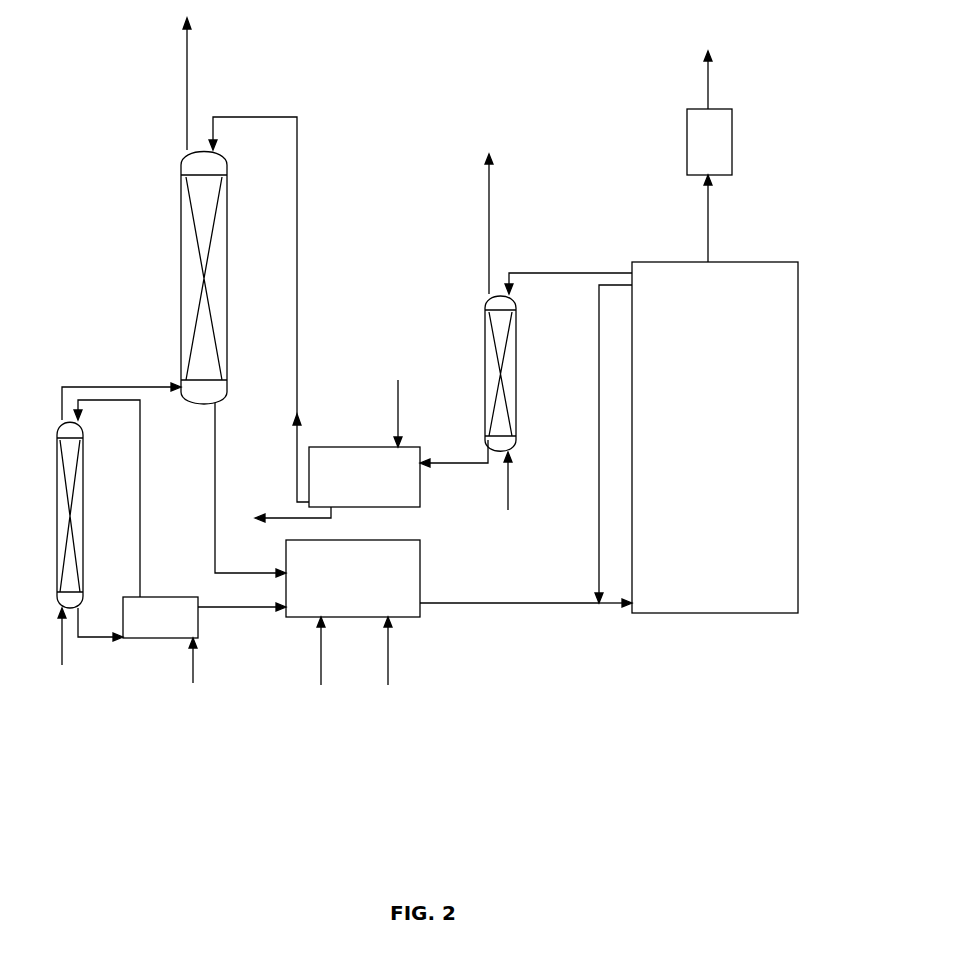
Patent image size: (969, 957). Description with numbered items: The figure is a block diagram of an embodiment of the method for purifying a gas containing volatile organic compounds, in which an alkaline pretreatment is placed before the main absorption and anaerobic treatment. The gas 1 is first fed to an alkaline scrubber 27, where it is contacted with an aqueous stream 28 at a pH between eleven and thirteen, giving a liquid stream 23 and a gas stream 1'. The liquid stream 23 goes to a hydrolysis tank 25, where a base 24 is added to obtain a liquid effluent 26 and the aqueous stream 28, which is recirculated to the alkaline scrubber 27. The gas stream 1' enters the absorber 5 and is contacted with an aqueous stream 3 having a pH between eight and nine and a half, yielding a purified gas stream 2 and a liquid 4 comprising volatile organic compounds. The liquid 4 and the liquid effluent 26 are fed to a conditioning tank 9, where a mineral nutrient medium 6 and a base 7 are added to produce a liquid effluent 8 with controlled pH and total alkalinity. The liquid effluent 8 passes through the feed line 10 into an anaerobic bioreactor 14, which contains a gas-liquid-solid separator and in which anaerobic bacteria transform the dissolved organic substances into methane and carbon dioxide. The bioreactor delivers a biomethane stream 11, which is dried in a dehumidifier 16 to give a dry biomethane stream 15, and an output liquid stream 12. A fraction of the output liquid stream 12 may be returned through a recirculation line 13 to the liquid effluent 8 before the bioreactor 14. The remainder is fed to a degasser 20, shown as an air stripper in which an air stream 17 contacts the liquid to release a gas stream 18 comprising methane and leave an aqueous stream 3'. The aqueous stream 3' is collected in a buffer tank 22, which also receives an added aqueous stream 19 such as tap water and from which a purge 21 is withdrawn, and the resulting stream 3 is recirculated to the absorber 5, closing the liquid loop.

The gas 1 is at (45, 636).
The gas stream 1' is at (121, 379).
The purified gas stream 2 is at (187, 135).
The aqueous stream 3 is at (259, 291).
The aqueous stream 3' is at (454, 449).
The liquid 4 is at (213, 450).
The absorber 5 is at (181, 277).
The mineral nutrient medium 6 is at (320, 663).
The base 7 is at (387, 662).
The liquid effluent 8 is at (497, 603).
The conditioning tank 9 is at (420, 594).
The feed line 10 is at (607, 603).
The biomethane stream 11 is at (707, 228).
The output liquid stream 12 is at (557, 273).
The recirculation line 13 is at (598, 383).
The anaerobic bioreactor 14 is at (745, 262).
The dry biomethane stream 15 is at (707, 84).
The dehumidifier 16 is at (687, 140).
The air stream 17 is at (508, 497).
The gas stream 18 is at (490, 233).
The aqueous stream 19 is at (397, 398).
The degasser 20 is at (485, 374).
The purge 21 is at (275, 517).
The buffer tank 22 is at (365, 447).
The liquid stream 23 is at (85, 637).
The base 24 is at (193, 667).
The hydrolysis tank 25 is at (153, 597).
The liquid effluent 26 is at (227, 607).
The alkaline scrubber 27 is at (85, 565).
The aqueous stream 28 is at (139, 502).